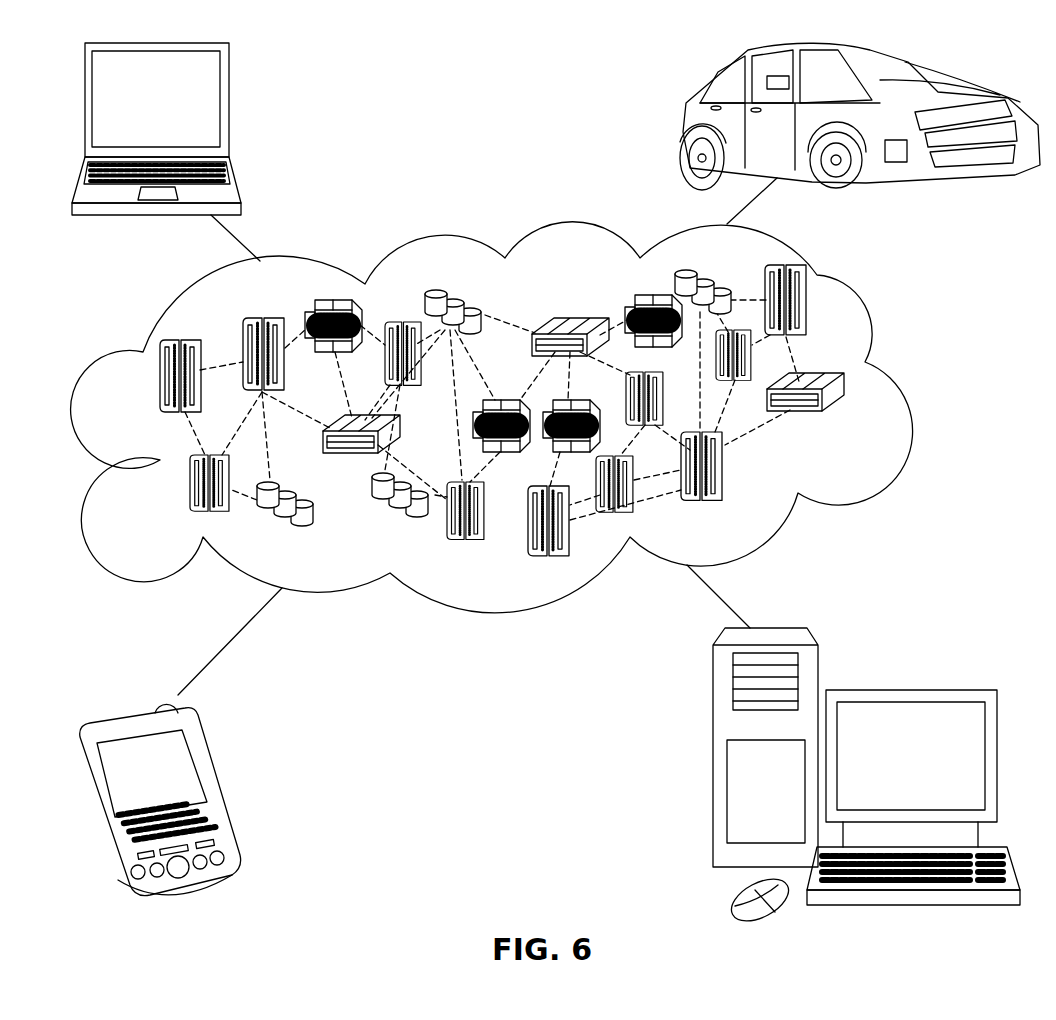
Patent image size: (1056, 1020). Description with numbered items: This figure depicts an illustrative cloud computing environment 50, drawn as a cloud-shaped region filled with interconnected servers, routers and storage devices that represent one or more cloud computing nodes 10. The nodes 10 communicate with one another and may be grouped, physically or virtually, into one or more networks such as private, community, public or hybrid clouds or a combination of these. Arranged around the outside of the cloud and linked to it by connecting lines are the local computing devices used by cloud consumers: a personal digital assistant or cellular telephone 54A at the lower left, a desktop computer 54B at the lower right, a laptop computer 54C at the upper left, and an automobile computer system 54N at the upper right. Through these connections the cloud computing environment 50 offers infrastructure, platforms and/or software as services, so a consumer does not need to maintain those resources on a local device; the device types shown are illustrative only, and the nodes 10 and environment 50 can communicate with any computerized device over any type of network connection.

The cloud computing node 10 is at (848, 422).
The cloud computing environment 50 is at (910, 386).
The personal digital assistant or cellular telephone 54A is at (217, 787).
The desktop computer 54B is at (908, 688).
The laptop computer 54C is at (228, 107).
The automobile computer system 54N is at (683, 123).